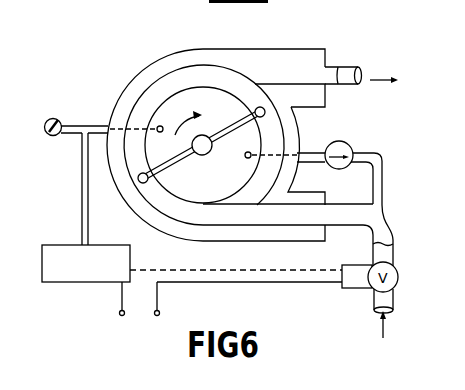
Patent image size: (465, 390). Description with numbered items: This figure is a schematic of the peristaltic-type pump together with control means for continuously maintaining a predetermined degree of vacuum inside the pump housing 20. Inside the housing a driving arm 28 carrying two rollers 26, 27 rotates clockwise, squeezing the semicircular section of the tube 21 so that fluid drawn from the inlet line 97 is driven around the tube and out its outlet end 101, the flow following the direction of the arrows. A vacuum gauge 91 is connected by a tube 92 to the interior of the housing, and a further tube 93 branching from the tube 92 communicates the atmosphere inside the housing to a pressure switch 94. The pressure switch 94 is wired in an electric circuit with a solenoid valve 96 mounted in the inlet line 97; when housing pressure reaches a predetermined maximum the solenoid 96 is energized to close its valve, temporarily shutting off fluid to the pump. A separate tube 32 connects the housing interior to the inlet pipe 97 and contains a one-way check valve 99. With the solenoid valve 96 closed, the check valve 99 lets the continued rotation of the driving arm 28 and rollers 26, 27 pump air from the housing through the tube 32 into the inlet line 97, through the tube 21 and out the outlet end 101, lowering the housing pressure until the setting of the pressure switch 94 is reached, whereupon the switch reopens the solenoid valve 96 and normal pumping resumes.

The pump housing 20 is at (297, 44).
The outlet end of the tube 101 is at (349, 66).
The tube 21 is at (172, 192).
The roller 26 is at (256, 105).
The roller 27 is at (149, 173).
The driving arm 28 is at (231, 125).
The tube 32 is at (307, 151).
The vacuum gauge 91 is at (59, 119).
The tube 92 is at (105, 124).
The tube 93 is at (82, 183).
The pressure switch 94 is at (68, 283).
The solenoid valve 96 is at (350, 288).
The inlet line 97 is at (394, 252).
The one-way check valve 99 is at (352, 146).